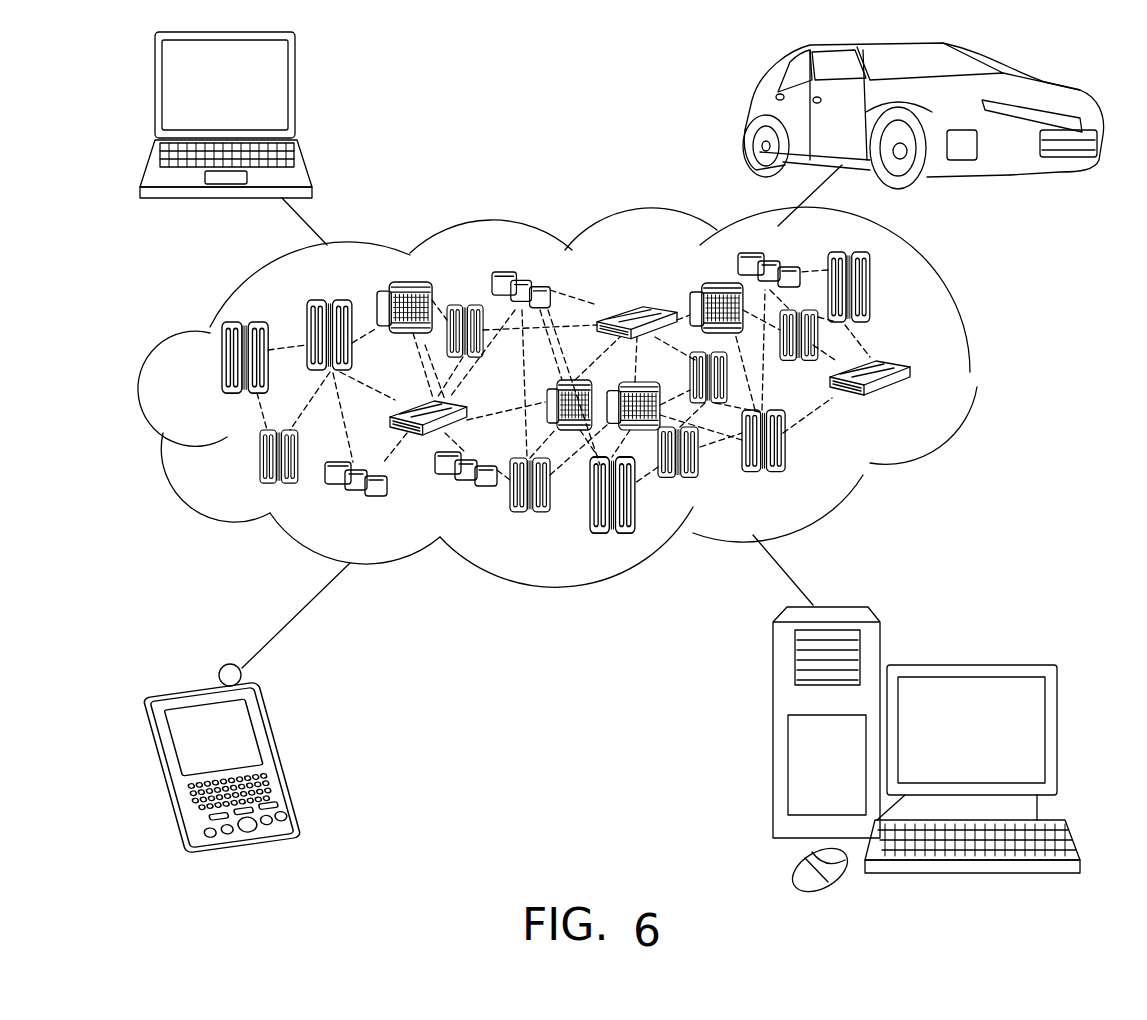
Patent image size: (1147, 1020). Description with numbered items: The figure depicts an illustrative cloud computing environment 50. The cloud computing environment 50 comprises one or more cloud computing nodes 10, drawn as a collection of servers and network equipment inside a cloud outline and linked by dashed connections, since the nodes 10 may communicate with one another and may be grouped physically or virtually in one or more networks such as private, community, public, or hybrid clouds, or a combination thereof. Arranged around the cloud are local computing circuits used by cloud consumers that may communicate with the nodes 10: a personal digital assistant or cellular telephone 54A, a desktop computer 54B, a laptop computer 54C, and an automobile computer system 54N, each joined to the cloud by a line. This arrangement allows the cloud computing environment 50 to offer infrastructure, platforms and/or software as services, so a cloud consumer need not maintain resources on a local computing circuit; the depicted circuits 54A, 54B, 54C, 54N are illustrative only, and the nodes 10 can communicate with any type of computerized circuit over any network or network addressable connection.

The cloud computing environment 50 is at (968, 377).
The cloud computing nodes 10 is at (912, 400).
The personal digital assistant (PDA) or cellular telephone 54A is at (282, 757).
The desktop computer 54B is at (967, 664).
The laptop computer 54C is at (299, 97).
The automobile computer system 54N is at (748, 115).